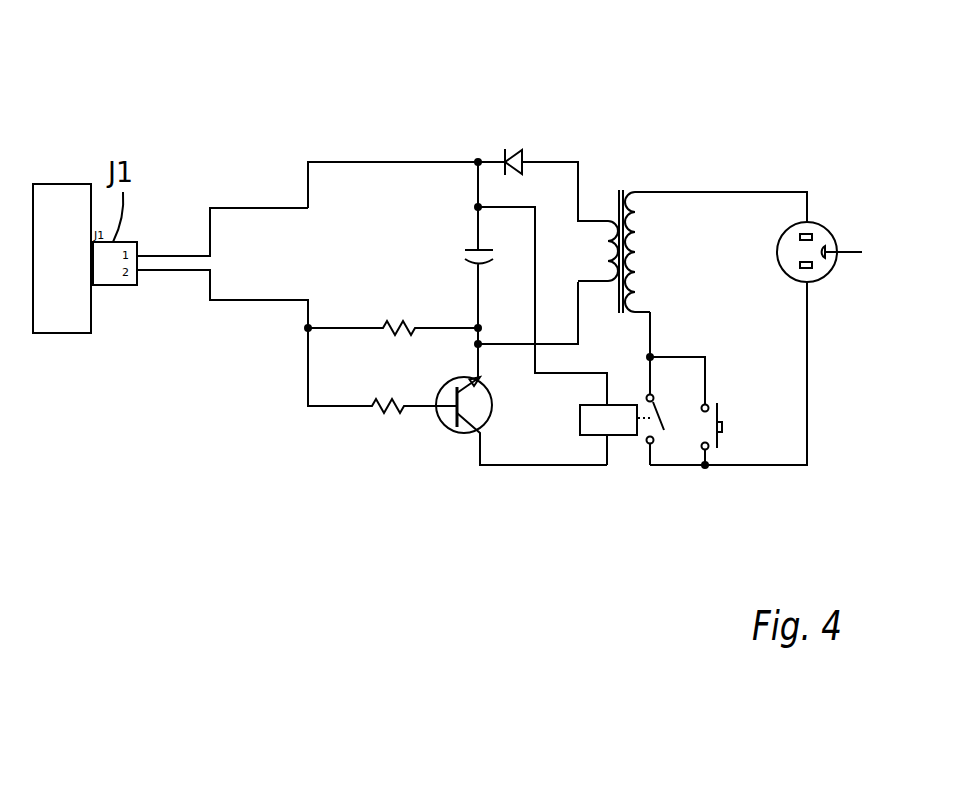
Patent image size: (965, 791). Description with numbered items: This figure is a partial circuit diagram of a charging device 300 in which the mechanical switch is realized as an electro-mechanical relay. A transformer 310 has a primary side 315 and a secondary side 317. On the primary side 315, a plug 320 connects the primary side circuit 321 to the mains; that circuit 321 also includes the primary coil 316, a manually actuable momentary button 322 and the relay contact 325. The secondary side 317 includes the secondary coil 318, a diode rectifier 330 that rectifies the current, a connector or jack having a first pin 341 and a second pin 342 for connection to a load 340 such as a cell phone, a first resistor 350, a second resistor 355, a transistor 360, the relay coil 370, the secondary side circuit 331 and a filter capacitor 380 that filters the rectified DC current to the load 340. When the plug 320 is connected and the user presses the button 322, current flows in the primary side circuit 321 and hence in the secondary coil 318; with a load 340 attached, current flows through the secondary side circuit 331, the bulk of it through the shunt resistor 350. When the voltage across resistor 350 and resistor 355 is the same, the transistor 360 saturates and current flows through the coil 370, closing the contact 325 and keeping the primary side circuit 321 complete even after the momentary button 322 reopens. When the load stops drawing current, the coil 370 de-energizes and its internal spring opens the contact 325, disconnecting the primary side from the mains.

The charging device 300 is at (702, 67).
The transformer 310 is at (624, 211).
The primary side 315 is at (647, 210).
The primary coil 316 is at (636, 248).
The secondary side 317 is at (599, 237).
The secondary coil 318 is at (607, 266).
The plug 320 is at (853, 250).
The primary side circuit 321 is at (808, 366).
The manually actuable button 322 is at (712, 448).
The relay contact 325 is at (677, 442).
The diode rectifier 330 is at (527, 148).
The secondary side circuit 331 is at (333, 160).
The load 340 is at (47, 184).
The first pin 341 is at (153, 254).
The second pin 342 is at (157, 272).
The first resistor 350 is at (410, 326).
The second resistor 355 is at (377, 410).
The transistor 360 is at (448, 433).
The coil 370 is at (579, 408).
The filter capacitor 380 is at (477, 250).